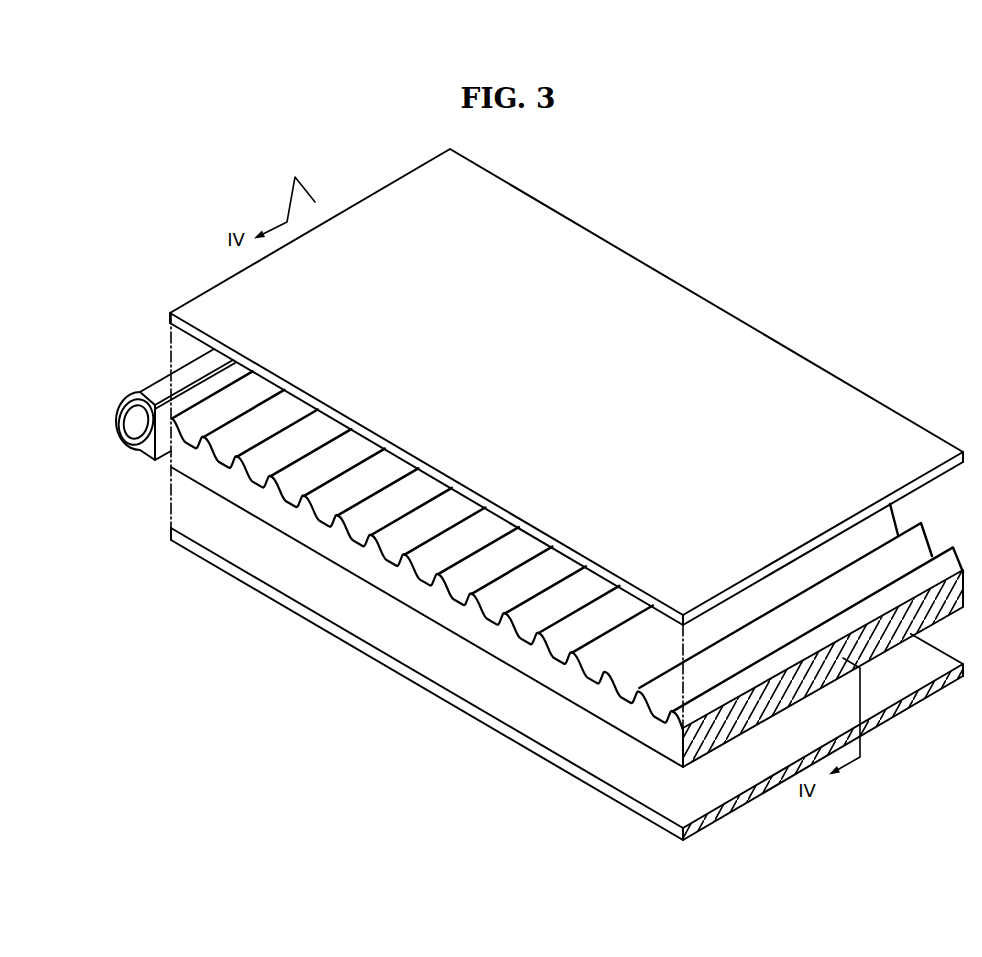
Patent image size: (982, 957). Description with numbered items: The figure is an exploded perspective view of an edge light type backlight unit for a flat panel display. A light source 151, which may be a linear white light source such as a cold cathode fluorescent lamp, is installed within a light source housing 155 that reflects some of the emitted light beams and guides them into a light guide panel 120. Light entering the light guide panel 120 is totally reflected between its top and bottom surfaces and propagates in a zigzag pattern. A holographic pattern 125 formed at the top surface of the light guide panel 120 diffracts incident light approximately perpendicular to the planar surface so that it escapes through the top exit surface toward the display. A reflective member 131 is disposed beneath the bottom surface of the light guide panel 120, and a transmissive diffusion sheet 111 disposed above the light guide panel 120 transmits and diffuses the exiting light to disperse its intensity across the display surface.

The transmissive diffusion sheet 111 is at (712, 313).
The light guide panel 120 is at (337, 557).
The holographic pattern 125 is at (442, 511).
The reflective member 131 is at (377, 649).
The light source 151 is at (133, 427).
The light source housing 155 is at (150, 378).